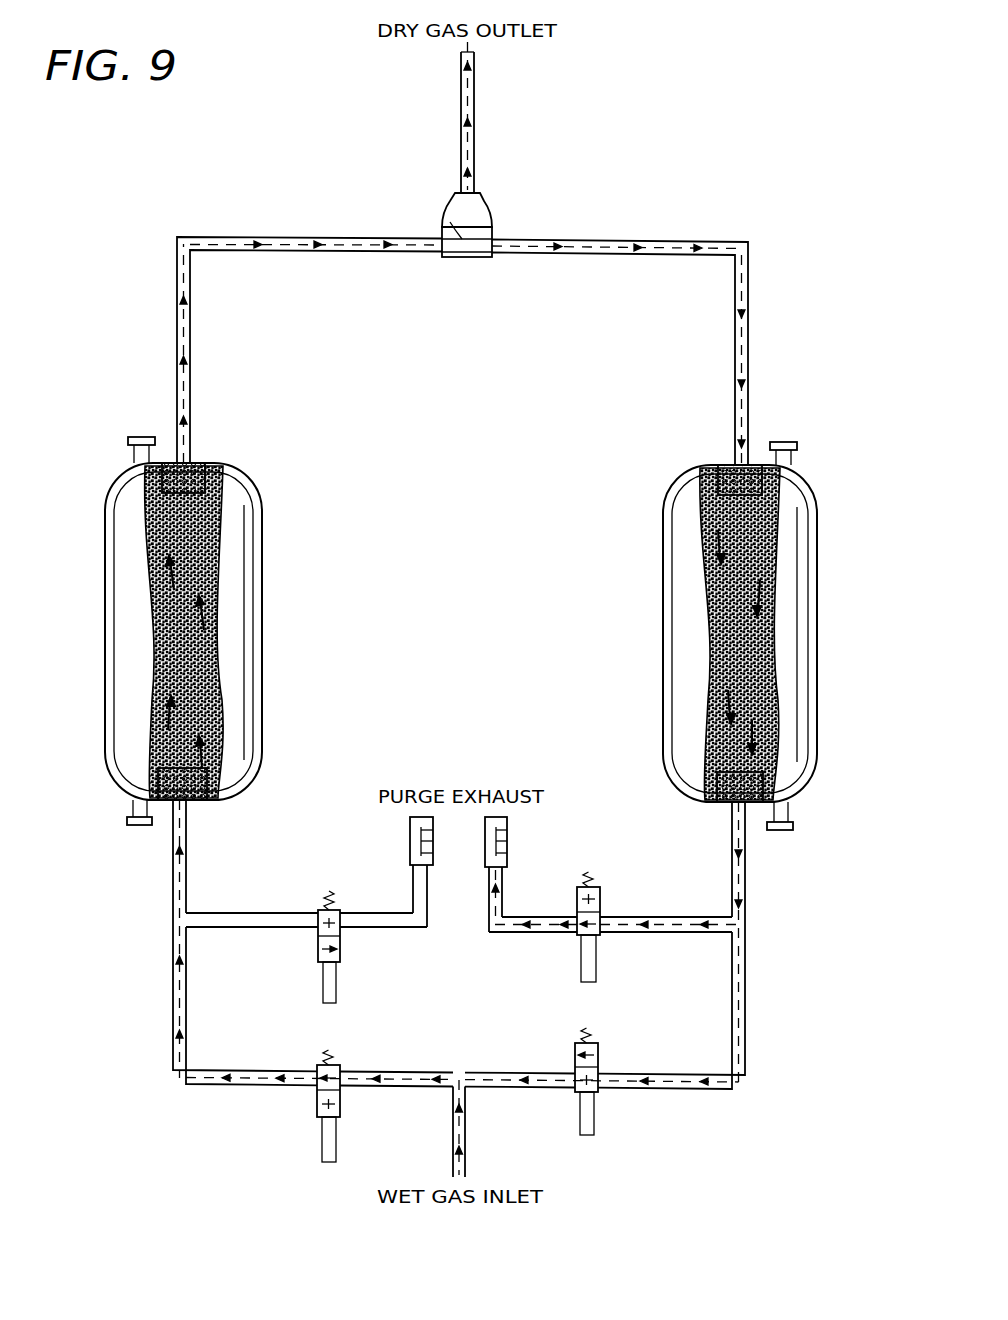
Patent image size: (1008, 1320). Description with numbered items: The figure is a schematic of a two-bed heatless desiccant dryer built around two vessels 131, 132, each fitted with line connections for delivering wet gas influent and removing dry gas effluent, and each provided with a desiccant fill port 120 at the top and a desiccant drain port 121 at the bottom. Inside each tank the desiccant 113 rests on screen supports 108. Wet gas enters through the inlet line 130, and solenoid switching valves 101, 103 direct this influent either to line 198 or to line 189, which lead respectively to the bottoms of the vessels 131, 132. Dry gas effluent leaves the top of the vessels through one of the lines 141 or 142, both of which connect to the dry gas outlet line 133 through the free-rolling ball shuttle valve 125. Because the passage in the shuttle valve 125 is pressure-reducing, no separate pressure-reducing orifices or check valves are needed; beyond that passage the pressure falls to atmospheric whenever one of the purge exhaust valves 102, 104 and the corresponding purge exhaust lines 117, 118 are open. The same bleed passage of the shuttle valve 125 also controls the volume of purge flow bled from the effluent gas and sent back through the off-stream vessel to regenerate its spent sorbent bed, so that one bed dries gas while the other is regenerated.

The solenoid switching valve 101 is at (315, 1103).
The purge exhaust valve 102 is at (340, 957).
The solenoid switching valve 103 is at (598, 1052).
The purge exhaust valve 104 is at (600, 898).
The screen support 108 is at (200, 770).
The desiccant 113 is at (160, 659).
The purge exhaust line 117 is at (410, 833).
The purge exhaust line 118 is at (507, 836).
The desiccant fill port 120 is at (128, 441).
The desiccant drain port 121 is at (141, 826).
The free-rolling ball shuttle valve 125 is at (483, 215).
The inlet line 130 is at (453, 1146).
The vessel 131 is at (107, 639).
The vessel 132 is at (818, 633).
The dry gas outlet line 133 is at (475, 97).
The effluent line 141 is at (262, 238).
The effluent line 142 is at (640, 242).
The influent line 189 is at (678, 1090).
The influent line 198 is at (215, 1086).